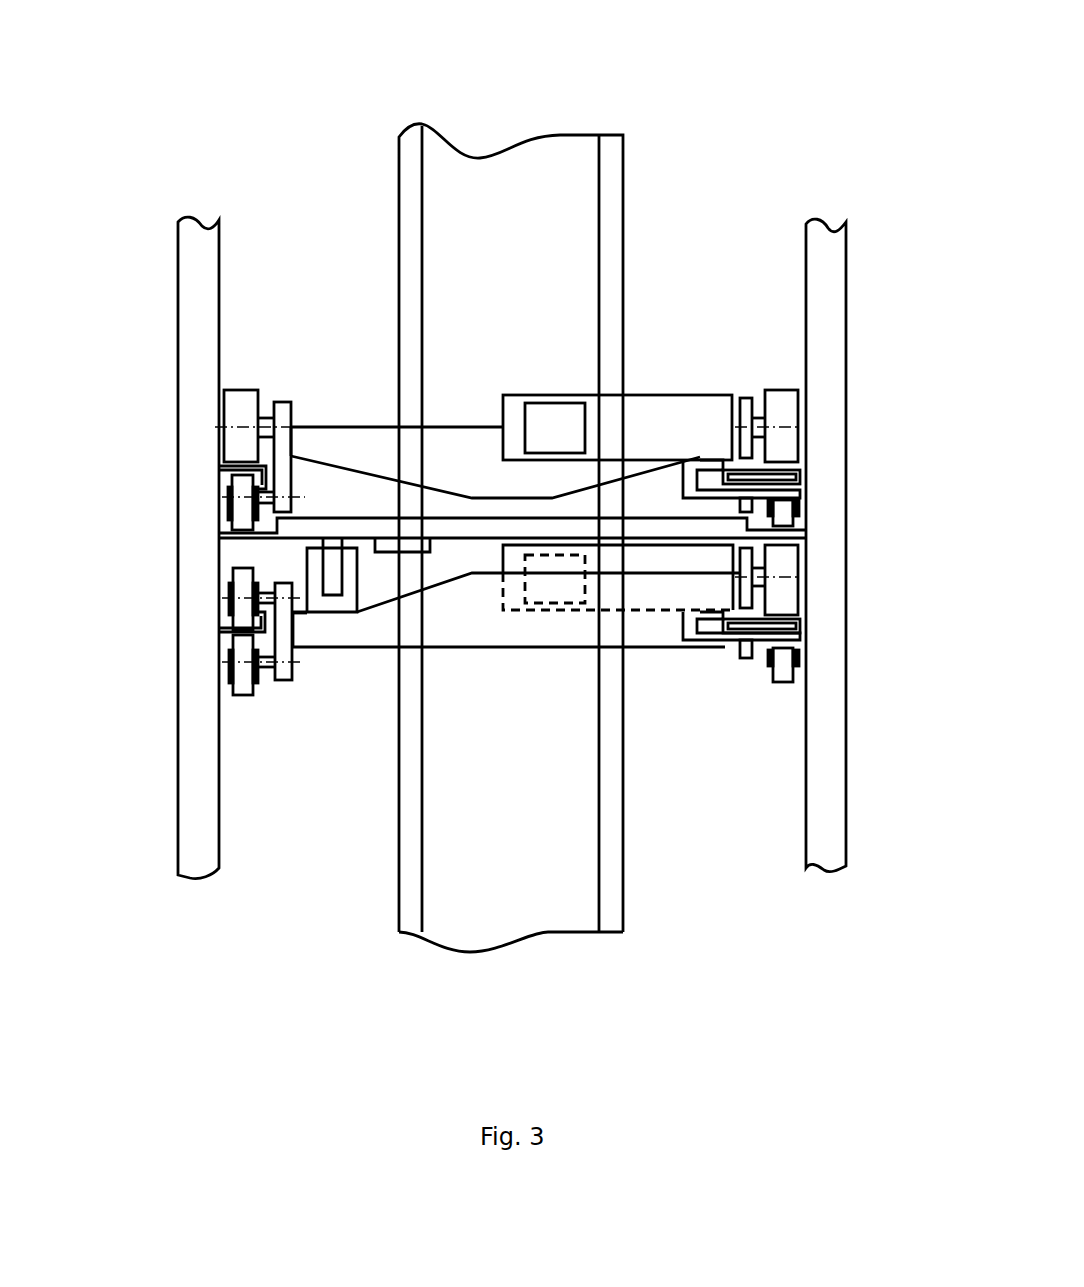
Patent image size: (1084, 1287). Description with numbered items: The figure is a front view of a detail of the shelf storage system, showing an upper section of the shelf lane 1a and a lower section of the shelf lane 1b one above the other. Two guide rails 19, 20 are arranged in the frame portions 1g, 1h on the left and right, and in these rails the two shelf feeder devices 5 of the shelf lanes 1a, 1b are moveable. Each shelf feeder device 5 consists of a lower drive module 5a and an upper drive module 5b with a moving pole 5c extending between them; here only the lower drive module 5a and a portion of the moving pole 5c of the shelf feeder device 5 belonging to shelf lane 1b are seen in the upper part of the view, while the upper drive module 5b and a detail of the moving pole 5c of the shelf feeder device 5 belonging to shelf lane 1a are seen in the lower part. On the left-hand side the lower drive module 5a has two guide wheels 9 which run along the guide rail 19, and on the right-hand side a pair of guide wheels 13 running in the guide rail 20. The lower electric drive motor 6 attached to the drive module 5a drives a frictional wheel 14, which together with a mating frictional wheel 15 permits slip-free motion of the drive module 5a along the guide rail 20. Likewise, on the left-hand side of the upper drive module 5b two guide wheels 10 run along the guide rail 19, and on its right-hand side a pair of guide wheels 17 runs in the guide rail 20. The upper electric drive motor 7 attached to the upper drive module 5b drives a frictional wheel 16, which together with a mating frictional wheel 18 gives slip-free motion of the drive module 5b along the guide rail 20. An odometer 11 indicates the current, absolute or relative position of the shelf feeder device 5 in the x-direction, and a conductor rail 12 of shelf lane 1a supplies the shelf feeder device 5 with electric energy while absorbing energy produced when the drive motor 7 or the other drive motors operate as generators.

The shelf lane 1a is at (147, 483).
The shelf lane 1b is at (147, 483).
The frame portion 1g is at (201, 268).
The frame portion 1h is at (821, 258).
The shelf feeder device 5 is at (515, 522).
The lower drive module 5a is at (357, 450).
The upper drive module 5b is at (516, 670).
The moving pole 5c is at (613, 172).
The electric drive motor 6 is at (672, 428).
The electric drive motor 7 is at (720, 590).
The guide wheels 9 is at (240, 406).
The guide wheels 10 is at (245, 588).
The odometer 11 is at (350, 602).
The conductor rail 12 is at (412, 548).
The guide wheels 13 is at (720, 477).
The frictional wheel 14 is at (782, 407).
The mating frictional wheel 15 is at (786, 515).
The frictional wheel 16 is at (786, 550).
The guide wheels 17 is at (770, 636).
The mating frictional wheel 18 is at (790, 672).
The guide rail 19 is at (236, 493).
The guide rail 20 is at (803, 466).